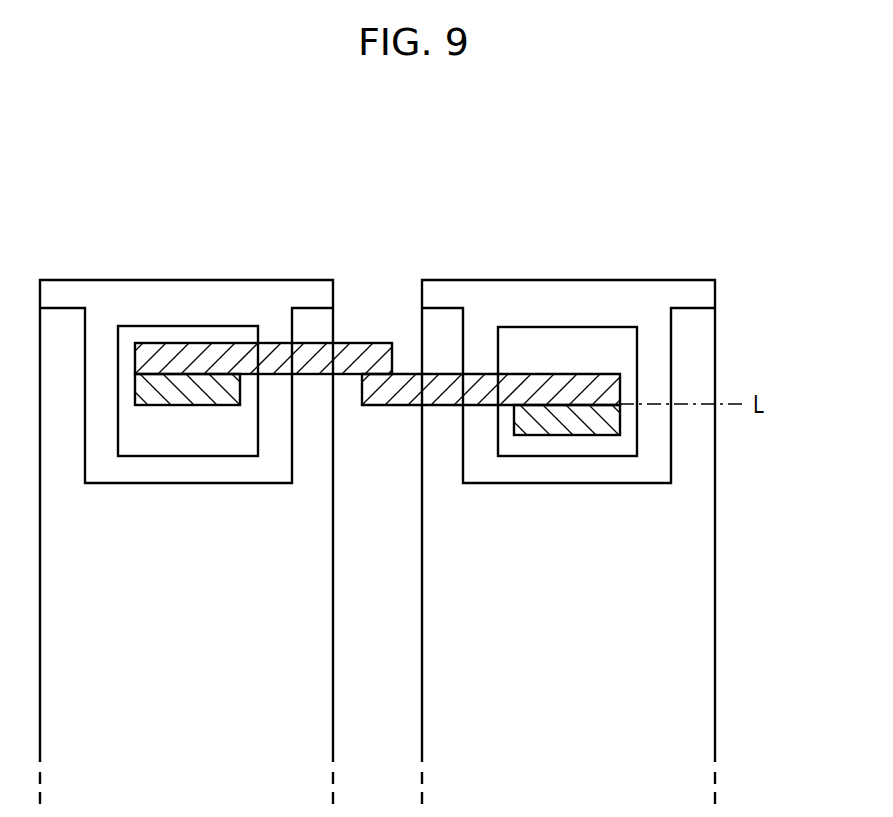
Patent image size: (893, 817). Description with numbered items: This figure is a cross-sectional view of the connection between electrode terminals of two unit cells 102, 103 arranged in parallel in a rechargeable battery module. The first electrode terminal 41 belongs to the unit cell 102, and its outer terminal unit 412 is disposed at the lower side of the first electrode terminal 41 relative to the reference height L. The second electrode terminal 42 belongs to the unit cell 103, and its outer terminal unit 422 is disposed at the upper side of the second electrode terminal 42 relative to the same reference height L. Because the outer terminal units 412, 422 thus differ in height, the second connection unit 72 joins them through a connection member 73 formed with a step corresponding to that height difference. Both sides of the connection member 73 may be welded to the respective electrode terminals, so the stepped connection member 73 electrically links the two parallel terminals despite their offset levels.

The first electrode terminal 41 is at (142, 322).
The outer terminal unit 412 is at (195, 388).
The unit cell 103 is at (258, 287).
The second connection unit 72 is at (380, 302).
The connection member 73 is at (442, 380).
The unit cell 102 is at (530, 288).
The outer terminal unit 422 is at (570, 413).
The second electrode terminal 42 is at (622, 322).